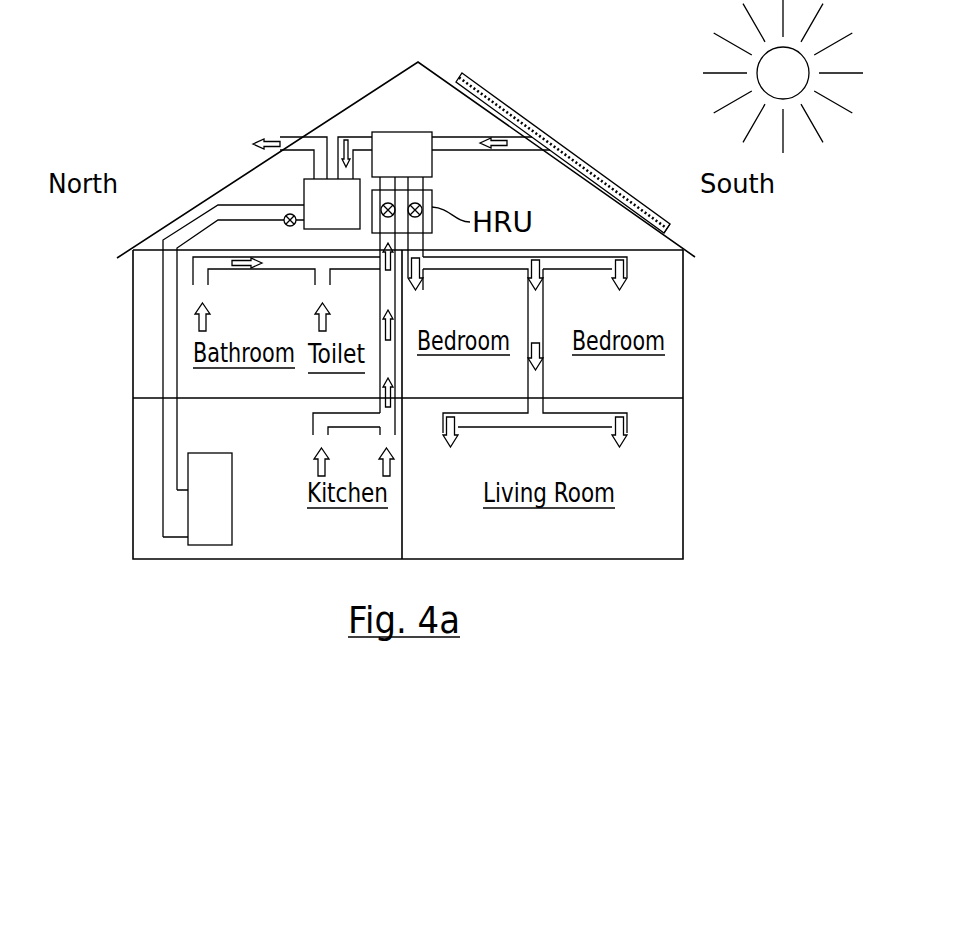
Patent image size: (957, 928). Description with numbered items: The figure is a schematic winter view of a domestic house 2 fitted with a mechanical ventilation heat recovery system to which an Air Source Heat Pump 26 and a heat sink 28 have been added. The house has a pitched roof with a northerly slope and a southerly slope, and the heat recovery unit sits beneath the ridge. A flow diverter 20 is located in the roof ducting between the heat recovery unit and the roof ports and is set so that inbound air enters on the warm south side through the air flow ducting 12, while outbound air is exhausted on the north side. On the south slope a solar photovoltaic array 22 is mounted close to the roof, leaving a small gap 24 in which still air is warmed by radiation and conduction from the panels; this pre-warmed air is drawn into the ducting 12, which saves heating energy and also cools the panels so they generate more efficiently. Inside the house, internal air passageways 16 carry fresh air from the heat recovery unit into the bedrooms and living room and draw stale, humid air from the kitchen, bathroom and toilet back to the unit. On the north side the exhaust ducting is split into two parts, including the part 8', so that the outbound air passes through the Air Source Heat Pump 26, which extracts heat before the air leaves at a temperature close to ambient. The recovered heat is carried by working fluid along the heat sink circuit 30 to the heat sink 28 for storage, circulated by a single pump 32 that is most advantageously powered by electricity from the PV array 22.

The domestic house 2 is at (124, 382).
The first part of air flow ducting 8' is at (355, 116).
The air flow ducting 12 is at (458, 143).
The air passageways or ducts 16 is at (288, 260).
The flow diverter 20 is at (402, 154).
The solar photovoltaic array 22 is at (487, 88).
The gap 24 is at (675, 230).
The Air Source Heat Pump 26 is at (325, 194).
The heat sink 28 is at (220, 472).
The heat sink circuit 30 is at (163, 333).
The pump 32 is at (283, 218).